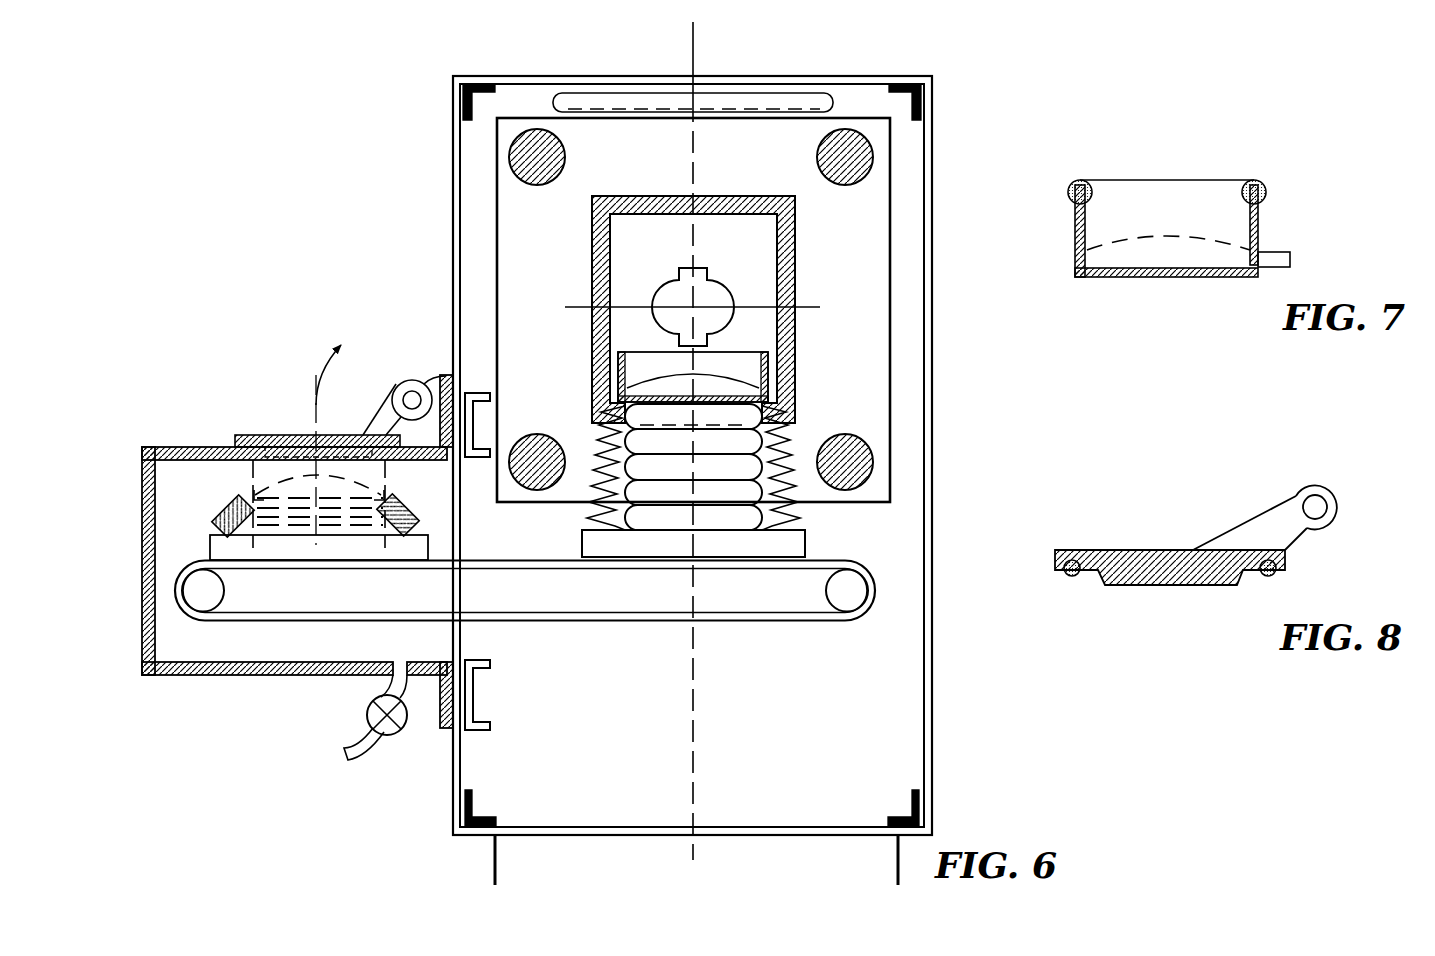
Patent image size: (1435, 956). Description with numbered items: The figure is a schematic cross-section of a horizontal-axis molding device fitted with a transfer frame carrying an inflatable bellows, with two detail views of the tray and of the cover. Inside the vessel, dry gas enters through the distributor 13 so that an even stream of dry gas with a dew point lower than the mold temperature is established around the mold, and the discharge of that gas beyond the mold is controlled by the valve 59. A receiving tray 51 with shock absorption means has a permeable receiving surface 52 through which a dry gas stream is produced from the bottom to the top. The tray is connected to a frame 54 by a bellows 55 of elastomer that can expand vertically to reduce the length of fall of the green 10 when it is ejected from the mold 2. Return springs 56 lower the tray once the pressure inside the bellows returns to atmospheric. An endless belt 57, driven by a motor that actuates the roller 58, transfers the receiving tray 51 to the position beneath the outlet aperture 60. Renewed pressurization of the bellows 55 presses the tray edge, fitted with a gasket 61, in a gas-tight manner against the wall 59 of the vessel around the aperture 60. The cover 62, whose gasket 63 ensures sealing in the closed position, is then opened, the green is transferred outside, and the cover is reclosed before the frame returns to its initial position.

In FIG. 6, the lens housing 2 is at (766, 290).
In FIG. 6, the green 10 is at (717, 284).
In FIG. 6, the distributor 13 is at (723, 102).
In FIG. 6, the receiving tray 51 is at (772, 371).
In FIG. 7, the receiving tray 51 is at (1243, 283).
In FIG. 6, the permeable receiving surface 52 is at (726, 376).
In FIG. 7, the permeable receiving surface 52 is at (1163, 244).
In FIG. 6, the frame 54 is at (592, 546).
In FIG. 6, the bellows 55 is at (737, 521).
In FIG. 6, the return springs 56 is at (788, 437).
In FIG. 6, the endless belt 57 is at (779, 623).
In FIG. 6, the roller 58 is at (853, 596).
In FIG. 6, the wall of the vessel 59 is at (194, 468).
In FIG. 6, the outlet aperture 60 is at (352, 460).
In FIG. 7, the gasket 61 is at (1270, 184).
In FIG. 6, the cover 62 is at (268, 434).
In FIG. 8, the cover 62 is at (1153, 548).
In FIG. 8, the gasket 63 is at (1282, 578).